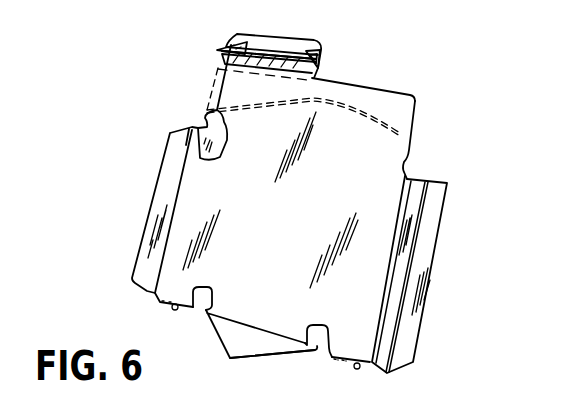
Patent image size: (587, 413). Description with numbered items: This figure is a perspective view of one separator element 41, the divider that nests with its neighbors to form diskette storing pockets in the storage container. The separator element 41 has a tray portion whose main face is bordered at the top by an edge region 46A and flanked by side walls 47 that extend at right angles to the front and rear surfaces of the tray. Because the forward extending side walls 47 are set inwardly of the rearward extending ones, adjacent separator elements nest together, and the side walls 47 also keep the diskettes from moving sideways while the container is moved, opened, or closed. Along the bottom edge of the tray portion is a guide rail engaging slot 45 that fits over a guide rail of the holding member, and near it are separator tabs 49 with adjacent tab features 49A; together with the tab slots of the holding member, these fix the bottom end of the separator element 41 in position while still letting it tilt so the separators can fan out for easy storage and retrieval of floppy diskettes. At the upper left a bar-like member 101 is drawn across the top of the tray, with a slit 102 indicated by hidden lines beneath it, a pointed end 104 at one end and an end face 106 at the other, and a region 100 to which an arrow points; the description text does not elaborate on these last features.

The separator element 41 is at (368, 50).
The guide rail engaging slot 45 is at (252, 371).
The top edge wall 46A is at (380, 90).
The side wall 47 is at (433, 225).
The separator tab 49 is at (168, 312).
The tab 49A is at (148, 302).
The slot 100 is at (198, 82).
The bar 101 is at (282, 35).
The slit 102 is at (227, 60).
The pointed end 104 is at (232, 44).
The end face 106 is at (320, 56).